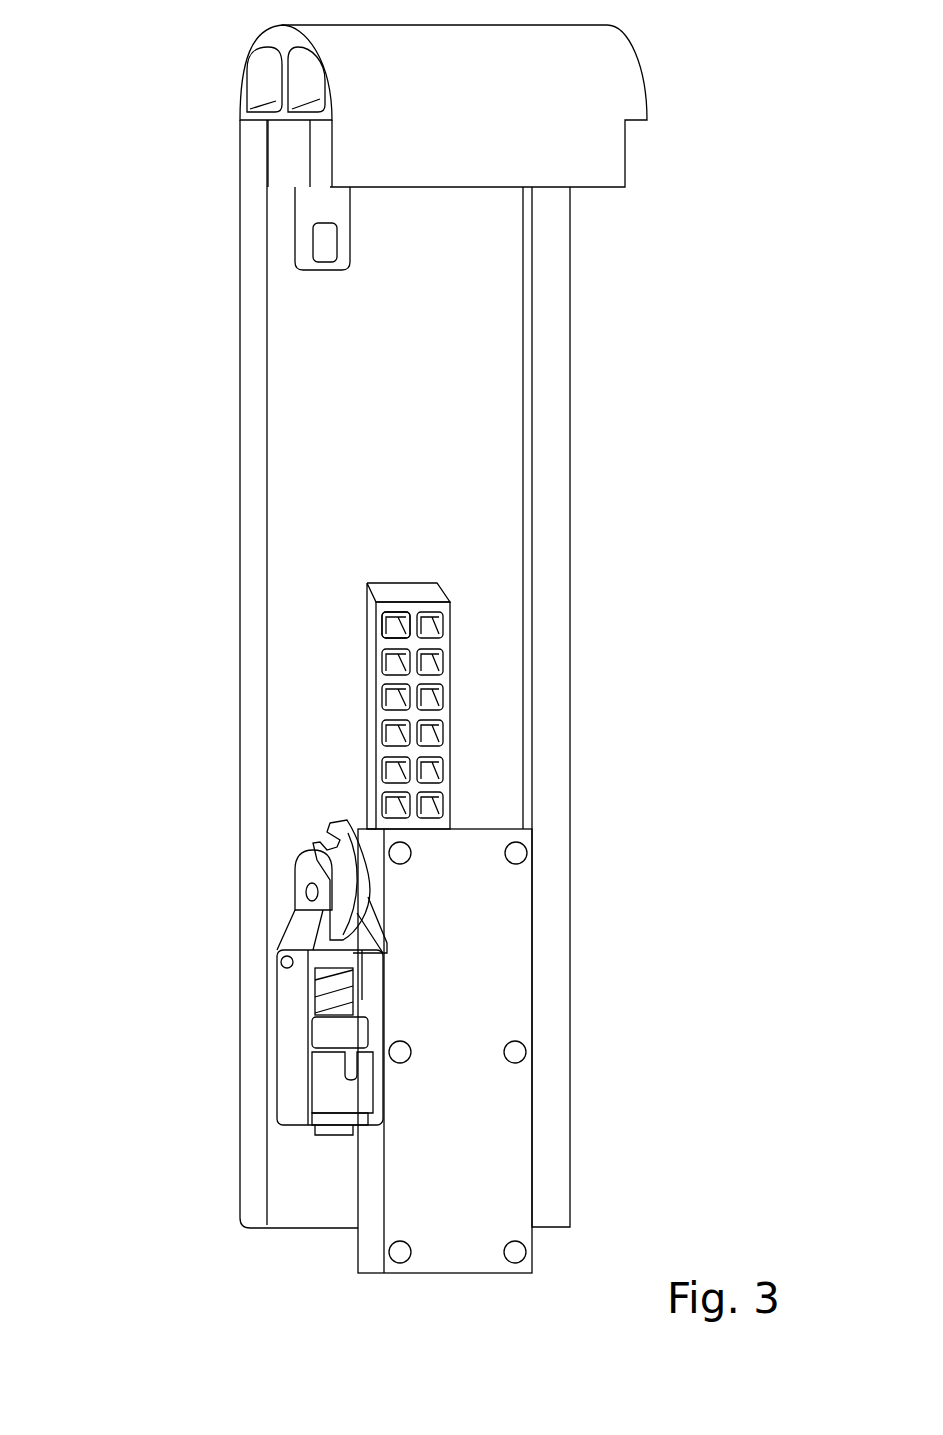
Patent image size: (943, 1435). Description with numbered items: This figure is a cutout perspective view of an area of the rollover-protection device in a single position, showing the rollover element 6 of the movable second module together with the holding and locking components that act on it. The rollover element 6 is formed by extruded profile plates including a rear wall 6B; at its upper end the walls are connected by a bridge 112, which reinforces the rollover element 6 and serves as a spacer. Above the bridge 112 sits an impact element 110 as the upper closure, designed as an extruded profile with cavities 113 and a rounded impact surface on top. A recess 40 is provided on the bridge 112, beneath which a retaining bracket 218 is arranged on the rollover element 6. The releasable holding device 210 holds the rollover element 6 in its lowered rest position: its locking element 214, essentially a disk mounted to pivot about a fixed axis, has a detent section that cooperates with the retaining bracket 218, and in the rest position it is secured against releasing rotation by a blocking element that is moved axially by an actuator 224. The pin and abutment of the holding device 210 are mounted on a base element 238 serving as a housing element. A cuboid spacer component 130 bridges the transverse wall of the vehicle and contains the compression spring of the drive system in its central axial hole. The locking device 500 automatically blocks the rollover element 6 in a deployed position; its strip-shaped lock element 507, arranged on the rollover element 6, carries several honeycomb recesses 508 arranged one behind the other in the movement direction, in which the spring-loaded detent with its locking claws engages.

The rollover element 6 is at (318, 500).
The rear wall 6B is at (323, 397).
The impact element 110 is at (287, 38).
The cavities 113 is at (273, 80).
The bridge 112 is at (295, 153).
The retaining bracket 218 is at (323, 273).
The recess 40 is at (327, 242).
The locking device 500 is at (352, 680).
The lock element 507 is at (383, 713).
The honeycomb recesses 508 is at (397, 625).
The spacer component 130 is at (395, 1180).
The holding device 210 is at (268, 1062).
The locking element 214 is at (350, 890).
The base element 238 is at (298, 995).
The actuator 224 is at (327, 1095).